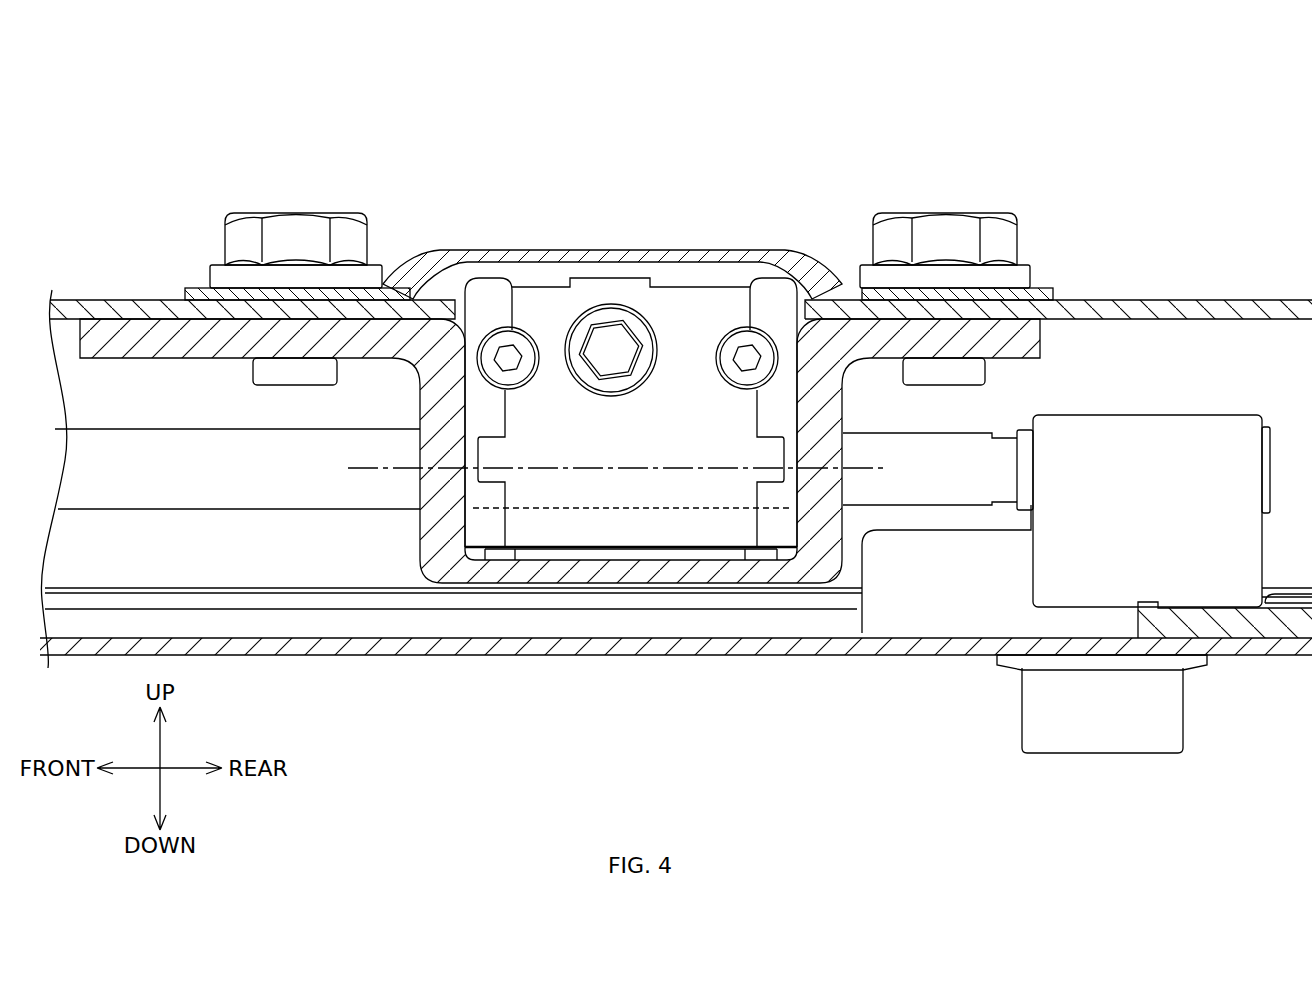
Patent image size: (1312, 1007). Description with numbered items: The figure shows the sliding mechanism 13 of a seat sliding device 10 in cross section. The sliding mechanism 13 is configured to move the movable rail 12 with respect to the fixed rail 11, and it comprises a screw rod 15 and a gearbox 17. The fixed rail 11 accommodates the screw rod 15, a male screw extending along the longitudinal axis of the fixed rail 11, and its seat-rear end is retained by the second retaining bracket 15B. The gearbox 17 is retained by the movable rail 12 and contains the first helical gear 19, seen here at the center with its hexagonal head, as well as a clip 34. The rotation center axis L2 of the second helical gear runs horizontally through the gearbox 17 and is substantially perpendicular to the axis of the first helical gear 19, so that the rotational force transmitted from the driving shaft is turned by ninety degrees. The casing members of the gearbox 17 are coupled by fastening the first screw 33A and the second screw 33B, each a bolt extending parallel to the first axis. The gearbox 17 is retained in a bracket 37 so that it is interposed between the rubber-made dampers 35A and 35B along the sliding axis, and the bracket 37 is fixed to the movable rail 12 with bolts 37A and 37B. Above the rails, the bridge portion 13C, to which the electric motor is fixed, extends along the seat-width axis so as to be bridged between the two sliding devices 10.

The sliding device 10 is at (673, 88).
The fixed rail 11 is at (752, 660).
The movable rail 12 is at (1140, 298).
The sliding mechanism 13 is at (673, 284).
The bridge portion 13C is at (632, 250).
The screw rod 15 is at (345, 510).
The second retaining bracket 15B is at (1165, 415).
The gearbox 17 is at (640, 515).
The first helical gear 19 is at (603, 318).
The first screw 33A is at (507, 345).
The second screw 33B is at (733, 340).
The clip 34 is at (507, 550).
The damper 35A is at (772, 297).
The damper 35B is at (483, 292).
The bracket 37 is at (843, 570).
The bolt 37A is at (950, 212).
The bolt 37B is at (315, 212).
The rotation center axis of the second helical gear L2 is at (863, 467).